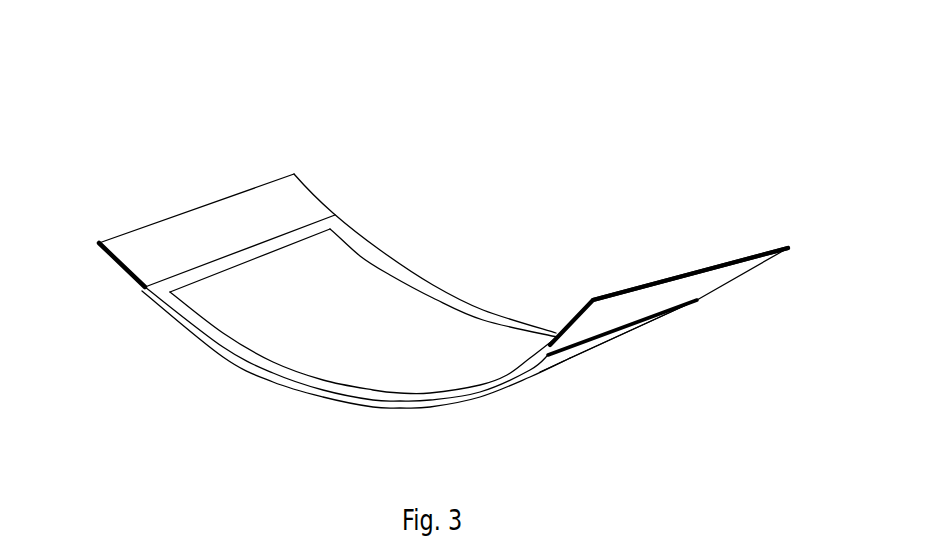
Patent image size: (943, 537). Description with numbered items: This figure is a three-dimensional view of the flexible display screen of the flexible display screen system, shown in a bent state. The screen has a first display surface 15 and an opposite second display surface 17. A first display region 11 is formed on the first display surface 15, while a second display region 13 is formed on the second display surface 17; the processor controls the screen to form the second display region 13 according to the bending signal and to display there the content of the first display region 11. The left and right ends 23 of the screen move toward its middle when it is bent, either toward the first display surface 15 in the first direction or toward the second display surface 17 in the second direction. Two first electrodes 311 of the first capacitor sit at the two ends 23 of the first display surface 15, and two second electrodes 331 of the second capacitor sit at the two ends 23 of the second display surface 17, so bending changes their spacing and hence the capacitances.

The first display region 11 is at (410, 328).
The second display region 13 is at (595, 345).
The first display surface 15 is at (381, 278).
The second display surface 17 is at (610, 380).
The left and right ends 23 is at (310, 163).
The first electrodes 311 is at (173, 240).
The second electrodes 331 is at (698, 290).